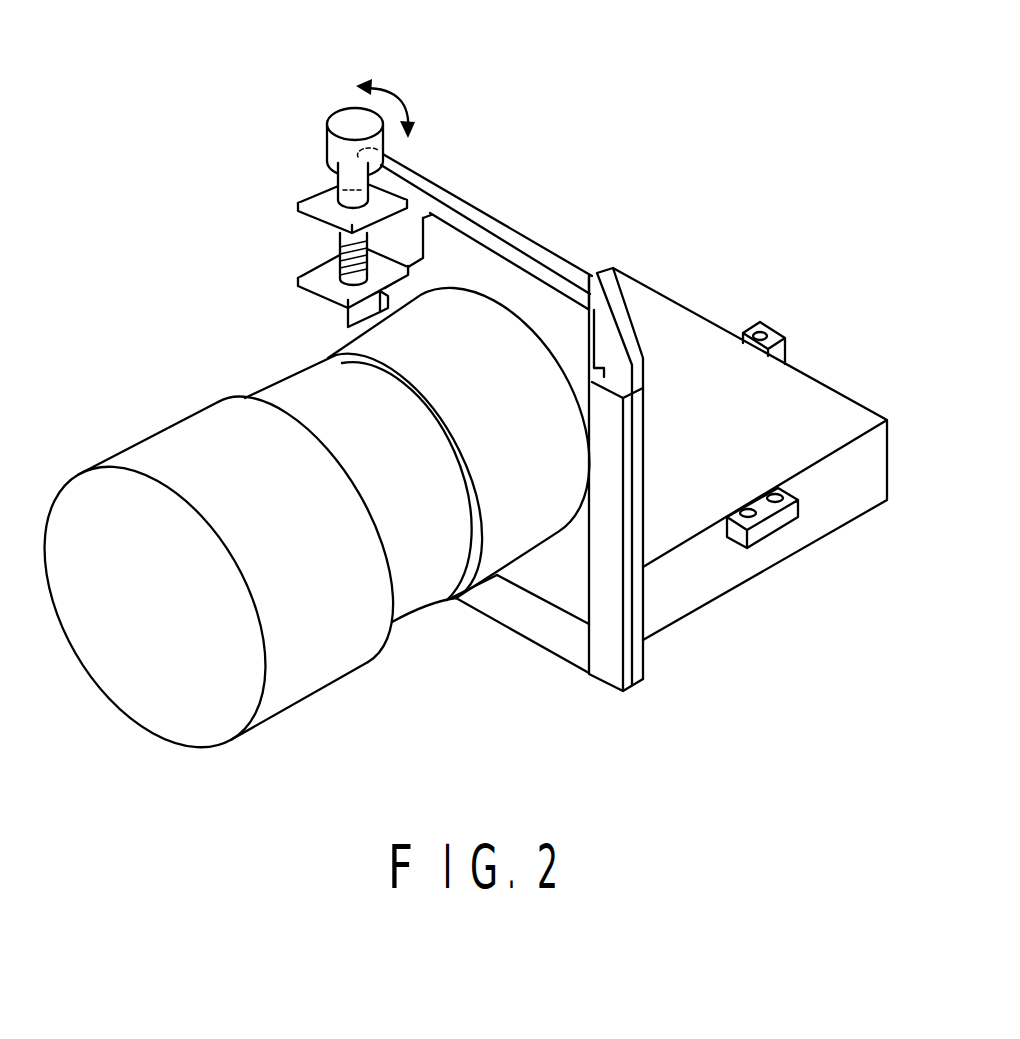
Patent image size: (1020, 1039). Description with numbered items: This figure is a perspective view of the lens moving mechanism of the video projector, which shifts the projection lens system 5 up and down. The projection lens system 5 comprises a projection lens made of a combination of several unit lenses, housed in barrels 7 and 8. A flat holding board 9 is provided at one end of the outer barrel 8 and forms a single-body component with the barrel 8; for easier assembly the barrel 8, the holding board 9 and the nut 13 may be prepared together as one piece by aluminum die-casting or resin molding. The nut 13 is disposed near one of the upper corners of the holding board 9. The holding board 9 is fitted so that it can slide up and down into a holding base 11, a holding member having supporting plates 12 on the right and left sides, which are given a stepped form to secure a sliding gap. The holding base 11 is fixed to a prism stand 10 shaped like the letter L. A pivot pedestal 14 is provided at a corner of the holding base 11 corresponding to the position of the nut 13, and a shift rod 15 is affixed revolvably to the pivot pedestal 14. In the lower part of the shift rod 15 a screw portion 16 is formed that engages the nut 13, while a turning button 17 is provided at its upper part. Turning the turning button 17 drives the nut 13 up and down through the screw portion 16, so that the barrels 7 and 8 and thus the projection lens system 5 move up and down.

The projection lens system 5 is at (326, 665).
The barrel 7 is at (409, 593).
The outer barrel 8 is at (527, 523).
The holding board 9 is at (455, 250).
The prism stand 10 is at (842, 502).
The holding base 11 is at (638, 622).
The supporting plate 12 is at (352, 325).
The nut 13 is at (330, 287).
The pivot pedestal 14 is at (317, 202).
The shift rod 15 is at (347, 182).
The screw portion 16 is at (340, 262).
The turning button 17 is at (337, 147).